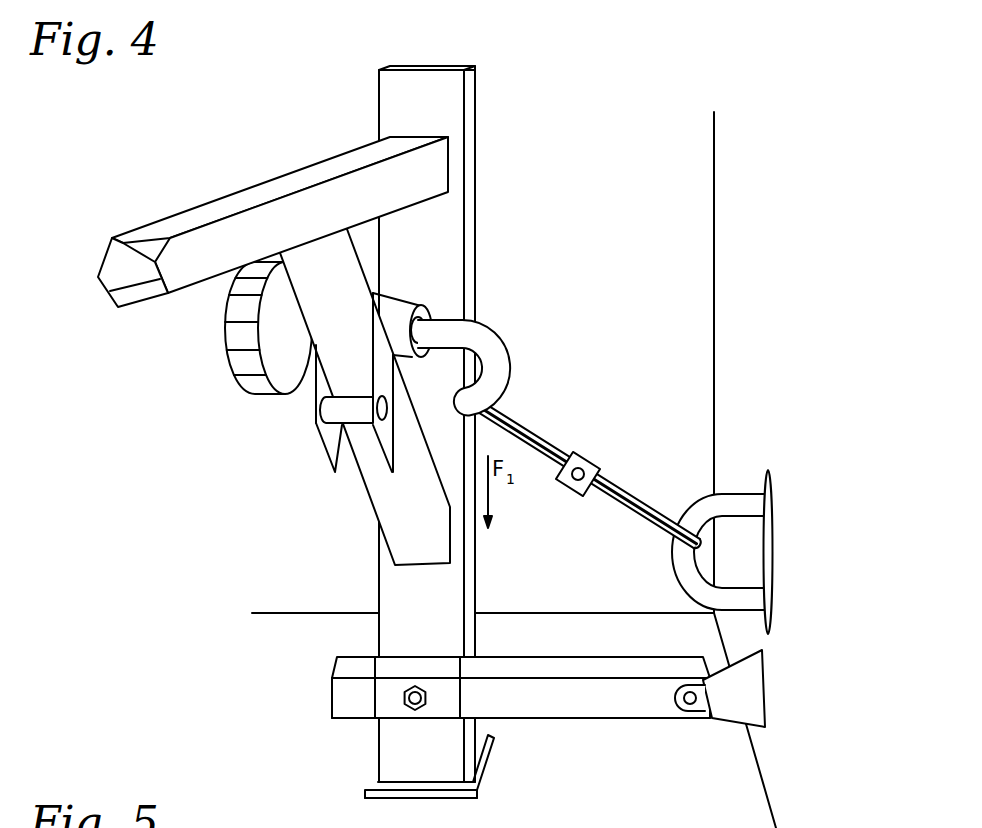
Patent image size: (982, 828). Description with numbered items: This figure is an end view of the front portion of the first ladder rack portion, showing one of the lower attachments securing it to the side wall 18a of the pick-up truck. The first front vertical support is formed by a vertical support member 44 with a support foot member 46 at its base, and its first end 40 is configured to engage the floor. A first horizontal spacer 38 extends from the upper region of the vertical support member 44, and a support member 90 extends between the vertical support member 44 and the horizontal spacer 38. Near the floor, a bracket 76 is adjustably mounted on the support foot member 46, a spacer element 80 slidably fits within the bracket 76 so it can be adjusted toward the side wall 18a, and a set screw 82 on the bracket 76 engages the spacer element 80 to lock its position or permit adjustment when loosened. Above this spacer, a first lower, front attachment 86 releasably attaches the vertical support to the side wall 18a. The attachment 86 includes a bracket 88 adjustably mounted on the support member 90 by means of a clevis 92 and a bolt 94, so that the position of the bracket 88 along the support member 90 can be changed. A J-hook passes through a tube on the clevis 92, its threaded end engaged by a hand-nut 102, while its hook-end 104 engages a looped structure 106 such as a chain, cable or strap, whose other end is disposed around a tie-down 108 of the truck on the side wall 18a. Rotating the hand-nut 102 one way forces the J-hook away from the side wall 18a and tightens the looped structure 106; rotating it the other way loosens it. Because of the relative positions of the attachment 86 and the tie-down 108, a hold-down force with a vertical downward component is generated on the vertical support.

The side wall 18a is at (715, 213).
The first horizontal spacer 38 is at (187, 220).
The first end 40 is at (490, 792).
The vertical support member 44 is at (470, 143).
The support foot member 46 is at (388, 752).
The bracket 76 is at (402, 663).
The spacer element 80 is at (592, 703).
The set screw 82 is at (407, 703).
The first lower, front attachment 86 is at (512, 317).
The bracket 88 is at (310, 388).
The support member 90 is at (380, 495).
The clevis 92 is at (330, 457).
The bolt 94 is at (340, 412).
The hand-nut 102 is at (223, 343).
The hook-end 104 is at (498, 363).
The looped structure 106 is at (637, 523).
The tie-down 108 is at (750, 492).